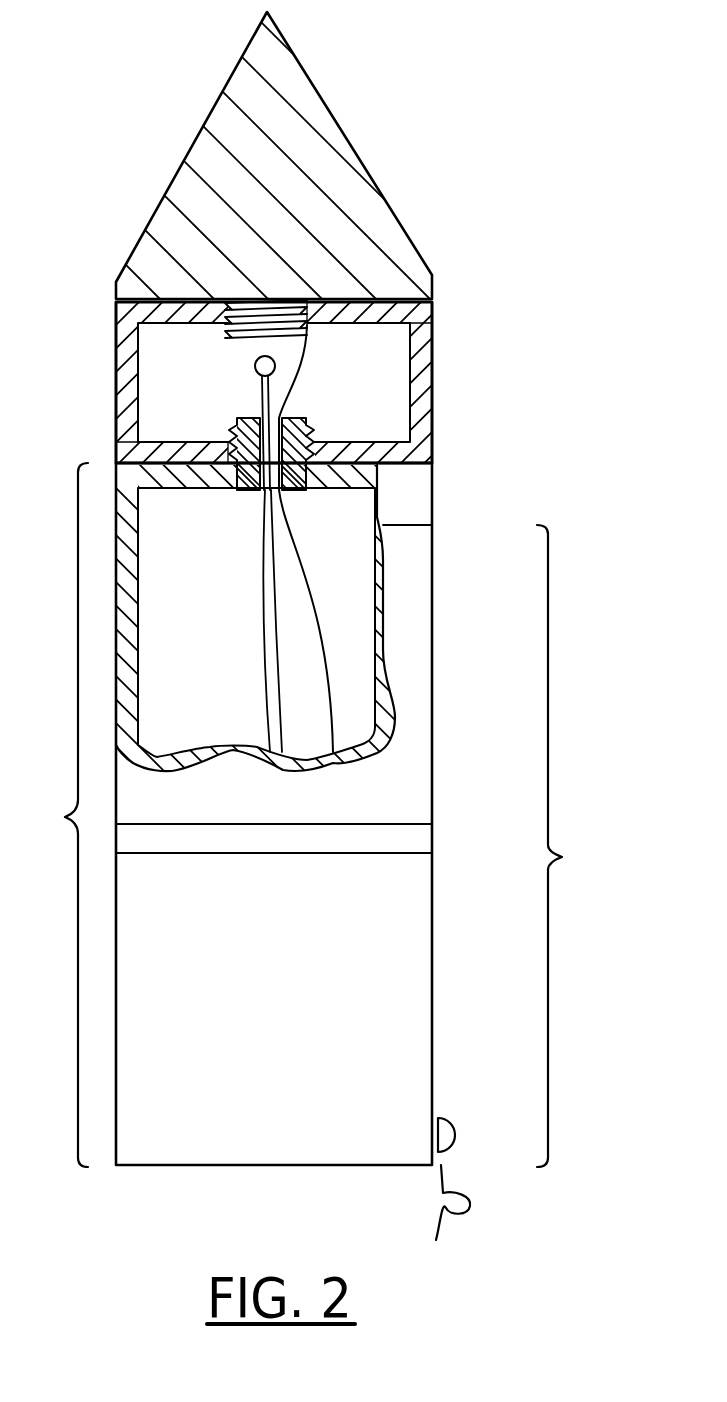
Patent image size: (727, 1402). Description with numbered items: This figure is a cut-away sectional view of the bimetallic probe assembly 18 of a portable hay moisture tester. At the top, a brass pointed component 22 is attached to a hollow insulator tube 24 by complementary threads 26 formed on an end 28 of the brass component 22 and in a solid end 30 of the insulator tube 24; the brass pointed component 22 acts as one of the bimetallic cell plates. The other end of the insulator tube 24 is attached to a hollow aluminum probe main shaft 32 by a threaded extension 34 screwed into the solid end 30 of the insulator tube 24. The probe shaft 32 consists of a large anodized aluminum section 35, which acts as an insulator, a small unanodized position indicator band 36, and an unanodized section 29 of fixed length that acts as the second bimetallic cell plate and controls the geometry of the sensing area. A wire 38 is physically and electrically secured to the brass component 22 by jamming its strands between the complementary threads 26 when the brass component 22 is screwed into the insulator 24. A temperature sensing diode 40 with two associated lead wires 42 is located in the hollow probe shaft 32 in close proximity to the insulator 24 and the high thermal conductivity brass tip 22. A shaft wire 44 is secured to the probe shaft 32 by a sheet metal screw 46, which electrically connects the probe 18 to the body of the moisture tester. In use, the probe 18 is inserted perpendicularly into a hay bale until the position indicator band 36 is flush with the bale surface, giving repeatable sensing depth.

The probe assembly 18 is at (578, 190).
The brass pointed component 22 is at (317, 163).
The hollow insulator tube 24 is at (415, 397).
The complementary threads 26 is at (274, 382).
The end of the brass component 28 is at (228, 332).
The unanodized section 29 is at (433, 498).
The solid end of the insulator tube 30 is at (205, 453).
The probe main shaft 32 is at (55, 815).
The threaded extension 34 is at (300, 417).
The large anodized aluminum section 35 is at (577, 846).
The position indicator band 36 is at (436, 843).
The wire 38 is at (312, 306).
The temperature sensing diode 40 is at (255, 369).
The lead wires 42 is at (276, 651).
The shaft wire 44 is at (443, 1185).
The sheet metal screw 46 is at (458, 1133).